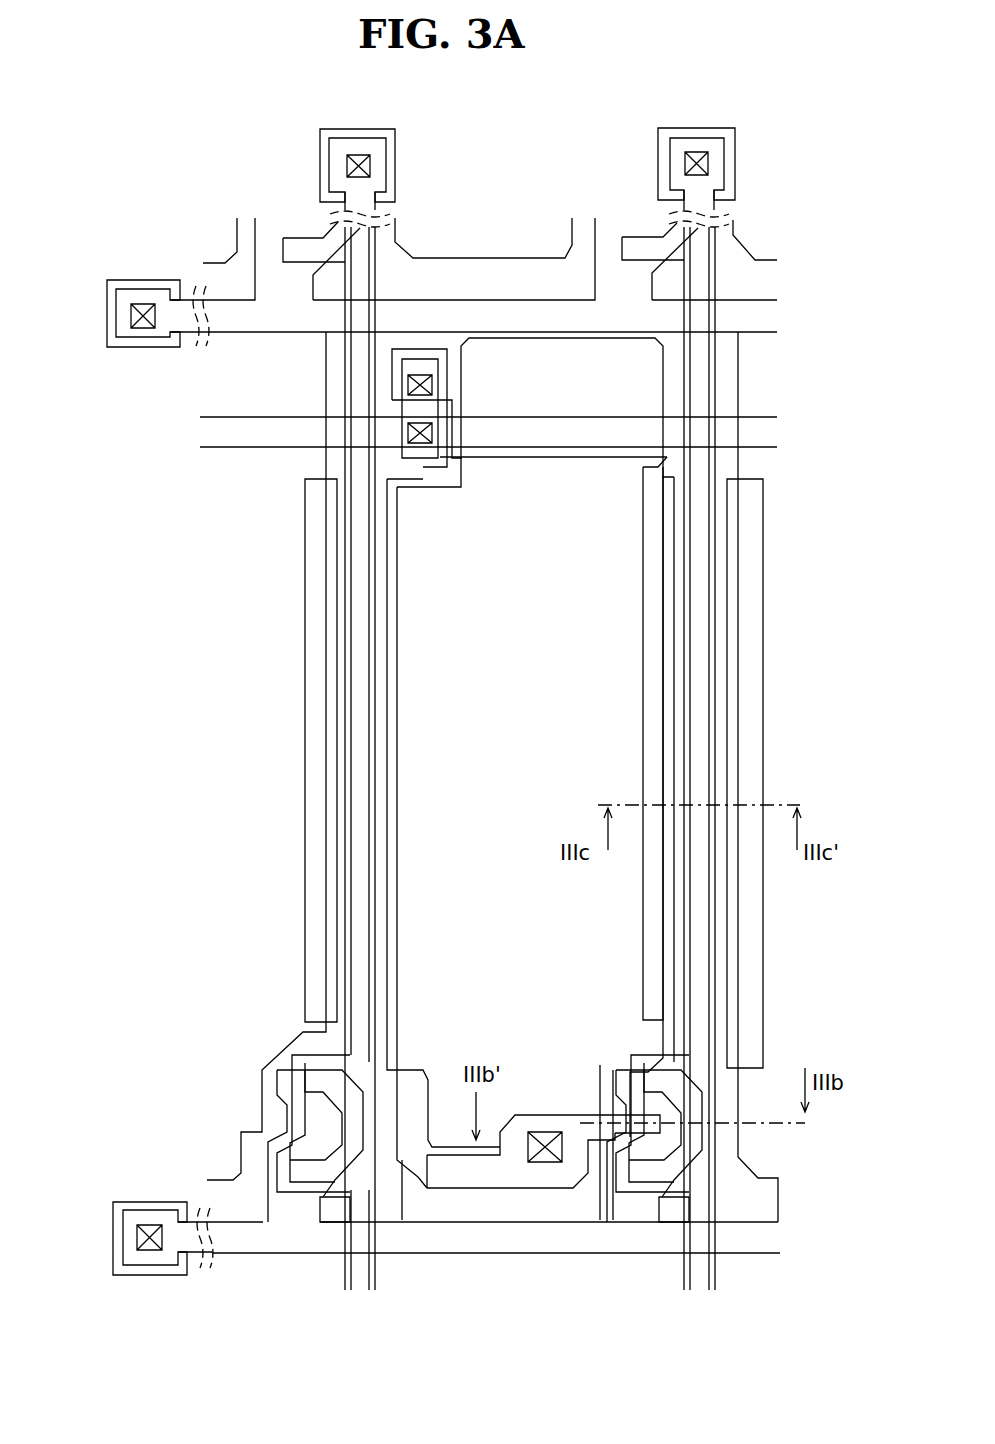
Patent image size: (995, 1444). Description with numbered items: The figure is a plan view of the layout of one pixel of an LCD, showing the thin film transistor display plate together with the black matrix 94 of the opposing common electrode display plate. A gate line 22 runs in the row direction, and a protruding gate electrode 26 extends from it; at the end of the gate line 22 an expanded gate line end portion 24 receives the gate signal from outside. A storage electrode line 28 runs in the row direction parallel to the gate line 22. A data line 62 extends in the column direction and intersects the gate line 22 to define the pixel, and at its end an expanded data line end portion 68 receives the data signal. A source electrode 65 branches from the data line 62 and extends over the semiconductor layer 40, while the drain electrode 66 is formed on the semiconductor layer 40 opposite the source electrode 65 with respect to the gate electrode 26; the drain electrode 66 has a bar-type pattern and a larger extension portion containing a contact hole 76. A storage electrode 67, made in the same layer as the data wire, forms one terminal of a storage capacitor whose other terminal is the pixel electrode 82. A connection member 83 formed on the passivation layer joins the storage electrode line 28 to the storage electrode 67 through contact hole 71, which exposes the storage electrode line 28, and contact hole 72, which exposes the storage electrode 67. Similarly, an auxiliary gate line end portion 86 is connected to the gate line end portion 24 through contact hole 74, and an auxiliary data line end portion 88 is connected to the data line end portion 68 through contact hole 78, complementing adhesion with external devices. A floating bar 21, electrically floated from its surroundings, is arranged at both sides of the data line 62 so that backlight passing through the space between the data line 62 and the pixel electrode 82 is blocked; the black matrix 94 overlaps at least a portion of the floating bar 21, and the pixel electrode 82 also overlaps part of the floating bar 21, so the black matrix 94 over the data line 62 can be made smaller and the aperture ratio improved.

The floating bar 21 is at (386, 892).
The gate line 22 is at (546, 298).
The gate line end portion 24 is at (113, 1240).
The gate electrode 26 is at (617, 1066).
The storage electrode line 28 is at (748, 416).
The semiconductor layer 40 is at (645, 1062).
The data line 62 is at (728, 1000).
The source electrode 65 is at (645, 1196).
The drain electrode 66 is at (606, 1086).
The storage electrode 67 is at (610, 460).
The data line end portion 68 is at (690, 163).
The contact hole 71 is at (436, 436).
The contact hole 72 is at (440, 382).
The contact hole 74 is at (146, 1252).
The contact hole 76 is at (544, 1165).
The contact hole 78 is at (695, 152).
The pixel electrode 82 is at (404, 666).
The connection member 83 is at (428, 372).
The auxiliary gate line end portion 86 is at (140, 1203).
The auxiliary data line end portion 88 is at (738, 143).
The black matrix 94 is at (440, 1125).